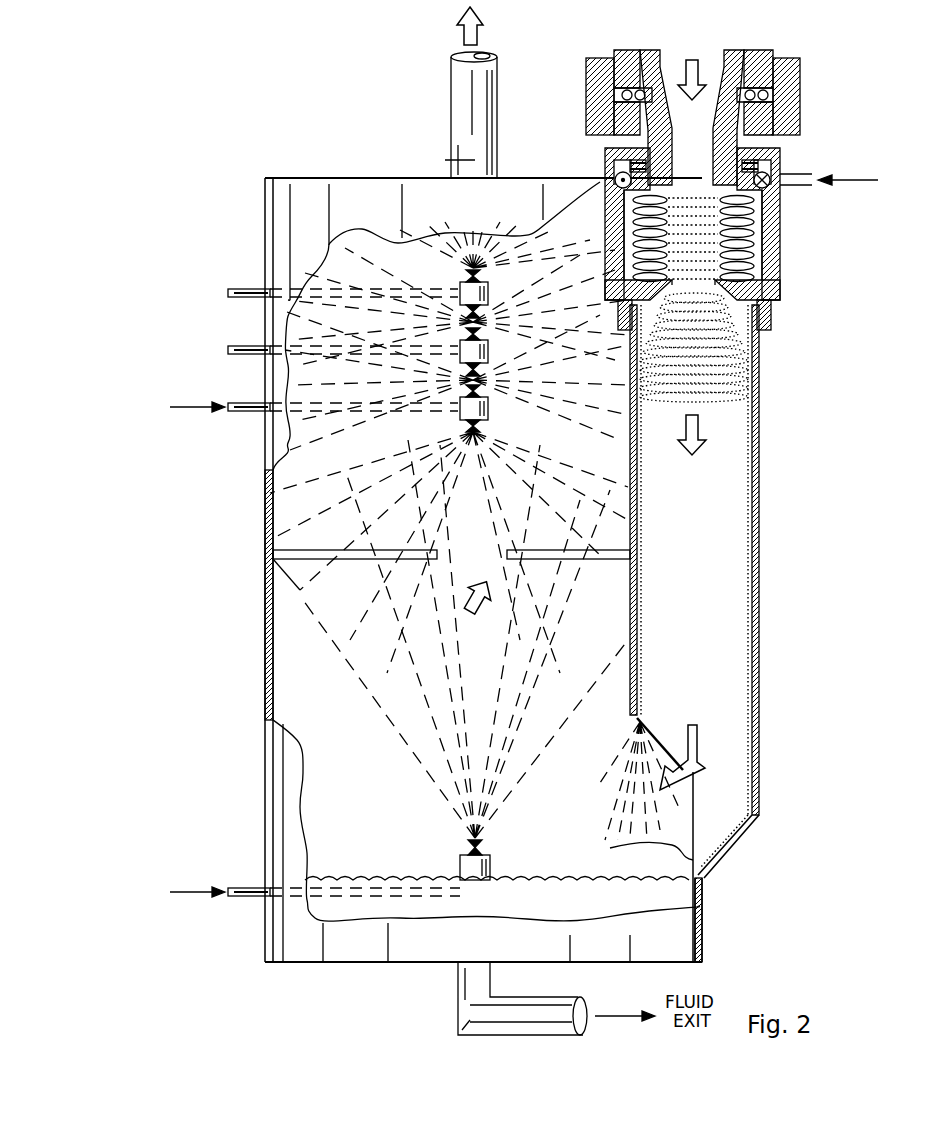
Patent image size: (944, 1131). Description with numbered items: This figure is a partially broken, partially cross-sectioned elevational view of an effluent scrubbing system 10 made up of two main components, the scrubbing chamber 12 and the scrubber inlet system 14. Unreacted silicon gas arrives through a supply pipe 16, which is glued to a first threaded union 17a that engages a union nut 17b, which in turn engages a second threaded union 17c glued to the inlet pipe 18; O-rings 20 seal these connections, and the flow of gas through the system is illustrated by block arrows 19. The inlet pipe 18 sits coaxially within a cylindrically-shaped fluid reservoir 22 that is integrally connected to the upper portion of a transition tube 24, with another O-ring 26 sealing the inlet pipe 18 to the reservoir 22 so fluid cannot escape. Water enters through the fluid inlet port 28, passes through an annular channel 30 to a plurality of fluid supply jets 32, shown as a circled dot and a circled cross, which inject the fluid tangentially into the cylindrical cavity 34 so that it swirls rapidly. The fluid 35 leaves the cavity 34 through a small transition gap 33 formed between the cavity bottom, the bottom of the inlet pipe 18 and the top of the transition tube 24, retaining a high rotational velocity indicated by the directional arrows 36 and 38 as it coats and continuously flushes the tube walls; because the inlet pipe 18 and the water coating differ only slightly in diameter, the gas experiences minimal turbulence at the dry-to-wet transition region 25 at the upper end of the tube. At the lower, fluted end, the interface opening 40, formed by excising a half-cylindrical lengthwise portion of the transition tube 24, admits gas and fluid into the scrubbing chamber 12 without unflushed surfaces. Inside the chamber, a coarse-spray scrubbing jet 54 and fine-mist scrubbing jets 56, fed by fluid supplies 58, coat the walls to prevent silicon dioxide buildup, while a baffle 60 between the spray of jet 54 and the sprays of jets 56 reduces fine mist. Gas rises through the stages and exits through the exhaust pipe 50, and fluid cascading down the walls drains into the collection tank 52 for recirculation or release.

The effluent scrubbing system 10 is at (232, 146).
The scrubbing chamber 12 is at (258, 690).
The scrubber inlet system 14 is at (708, 631).
The supply pipe 16 is at (740, 52).
The first threaded union 17a is at (760, 58).
The union nut 17b is at (790, 58).
The second threaded union 17c is at (785, 140).
The inlet pipe 18 is at (718, 128).
The block arrows 19 is at (683, 62).
The O-rings 20 is at (735, 88).
The fluid reservoir 22 is at (716, 221).
The transition tube 24 is at (630, 392).
The dry-to-wet transition region 25 is at (762, 312).
The O-ring 26 is at (674, 182).
The fluid inlet port 28 is at (832, 168).
The annular channel 30 is at (624, 180).
The fluid supply jets 32 is at (785, 152).
The transition gap 33 is at (780, 292).
The cylindrical cavity 34 is at (755, 242).
The fluid 35 is at (758, 356).
The directional arrow 36 is at (757, 408).
The directional arrow 38 is at (735, 398).
The interface opening 40 is at (696, 785).
The exhaust pipe 50 is at (470, 160).
The collection tank 52 is at (710, 895).
The scrubbing jet 54 is at (473, 868).
The scrubbing jets 56 is at (460, 410).
The fluid supplies 58 is at (232, 407).
The baffle 60 is at (355, 558).